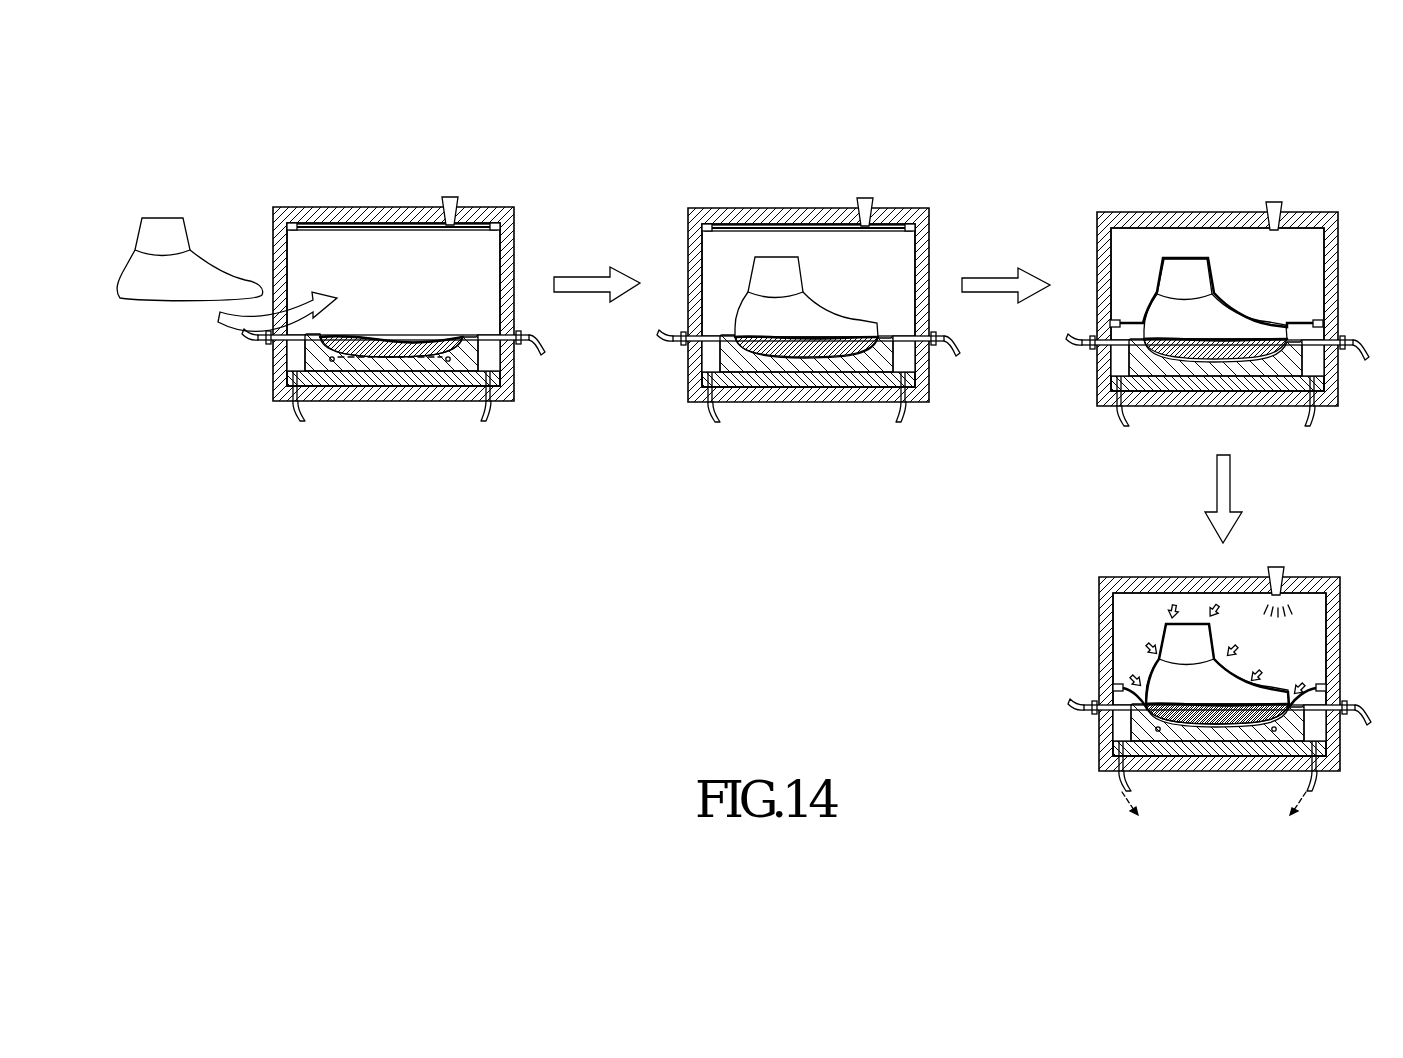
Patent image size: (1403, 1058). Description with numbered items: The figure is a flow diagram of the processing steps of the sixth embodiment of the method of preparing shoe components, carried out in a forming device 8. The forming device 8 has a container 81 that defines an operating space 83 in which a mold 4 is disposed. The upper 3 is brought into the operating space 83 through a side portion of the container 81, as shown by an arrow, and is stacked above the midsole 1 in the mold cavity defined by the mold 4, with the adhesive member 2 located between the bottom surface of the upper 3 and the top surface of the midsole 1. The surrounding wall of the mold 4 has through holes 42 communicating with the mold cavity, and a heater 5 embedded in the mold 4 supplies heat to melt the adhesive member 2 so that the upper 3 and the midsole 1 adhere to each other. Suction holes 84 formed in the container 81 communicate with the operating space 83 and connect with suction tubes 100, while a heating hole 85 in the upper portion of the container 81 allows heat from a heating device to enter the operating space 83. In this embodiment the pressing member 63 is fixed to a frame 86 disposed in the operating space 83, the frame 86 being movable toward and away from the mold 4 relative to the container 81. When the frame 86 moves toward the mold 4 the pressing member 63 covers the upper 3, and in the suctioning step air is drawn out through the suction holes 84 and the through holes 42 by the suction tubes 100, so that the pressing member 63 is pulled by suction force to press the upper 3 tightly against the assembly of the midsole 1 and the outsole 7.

The midsole 1 is at (455, 352).
The adhesive member 2 is at (430, 337).
The upper 3 is at (210, 272).
The mold 4 is at (332, 362).
The heater 5 is at (378, 366).
The outsole 7 is at (434, 360).
The forming device 8 is at (316, 197).
The through hole 42 is at (480, 350).
The pressing member 63 is at (400, 226).
The container 81 is at (506, 242).
The operating space 83 is at (462, 248).
The suction hole 84 is at (290, 379).
The heating hole 85 is at (450, 200).
The frame 86 is at (498, 232).
The suction tube 100 is at (256, 337).